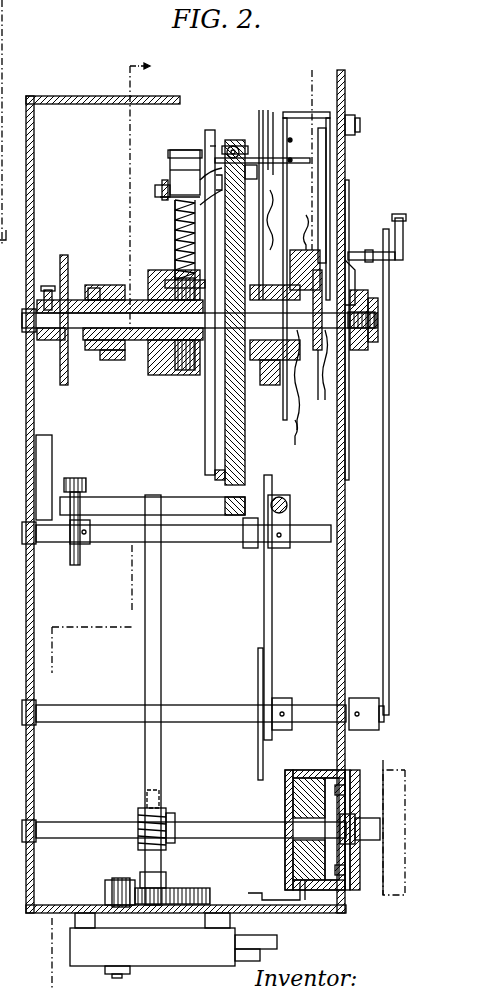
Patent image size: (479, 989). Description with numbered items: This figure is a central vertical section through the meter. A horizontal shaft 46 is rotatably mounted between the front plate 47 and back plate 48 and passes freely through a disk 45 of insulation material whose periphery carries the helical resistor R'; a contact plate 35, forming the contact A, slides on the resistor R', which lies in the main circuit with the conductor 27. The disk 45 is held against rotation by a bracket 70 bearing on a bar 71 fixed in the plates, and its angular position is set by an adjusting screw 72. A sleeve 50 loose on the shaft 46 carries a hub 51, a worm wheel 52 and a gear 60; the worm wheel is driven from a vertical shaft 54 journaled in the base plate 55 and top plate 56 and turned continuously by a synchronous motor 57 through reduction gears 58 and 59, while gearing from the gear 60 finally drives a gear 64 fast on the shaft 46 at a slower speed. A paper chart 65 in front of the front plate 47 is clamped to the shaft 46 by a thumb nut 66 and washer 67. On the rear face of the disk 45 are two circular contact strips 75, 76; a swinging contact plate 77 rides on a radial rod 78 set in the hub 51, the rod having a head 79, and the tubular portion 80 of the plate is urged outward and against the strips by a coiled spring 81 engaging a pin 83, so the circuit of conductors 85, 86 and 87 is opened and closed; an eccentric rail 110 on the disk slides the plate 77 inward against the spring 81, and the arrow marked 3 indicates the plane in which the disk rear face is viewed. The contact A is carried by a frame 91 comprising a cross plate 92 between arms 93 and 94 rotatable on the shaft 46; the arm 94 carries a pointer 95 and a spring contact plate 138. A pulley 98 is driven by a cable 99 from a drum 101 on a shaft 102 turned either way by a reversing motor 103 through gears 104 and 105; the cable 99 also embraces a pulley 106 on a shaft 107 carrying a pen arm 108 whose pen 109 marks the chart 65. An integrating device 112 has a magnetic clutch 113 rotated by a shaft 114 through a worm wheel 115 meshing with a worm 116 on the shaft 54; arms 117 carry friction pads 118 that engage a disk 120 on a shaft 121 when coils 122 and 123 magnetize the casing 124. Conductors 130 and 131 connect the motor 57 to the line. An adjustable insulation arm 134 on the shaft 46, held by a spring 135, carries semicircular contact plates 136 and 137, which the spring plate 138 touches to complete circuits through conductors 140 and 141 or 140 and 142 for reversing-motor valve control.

The section line 3 is at (146, 195).
The conductor 27 is at (11, 251).
The contact plate 35 is at (228, 145).
The disk 45 is at (225, 430).
The horizontal shaft 46 is at (74, 312).
The front plate 47 is at (346, 76).
The back plate 48 is at (34, 130).
The sleeve 50 is at (130, 355).
The hub 51 is at (170, 372).
The worm wheel 52 is at (150, 372).
The vertical shaft 54 is at (161, 640).
The base plate 55 is at (34, 913).
The top plate 56 is at (103, 89).
The synchronous motor 57 is at (145, 958).
The reduction gear 58 is at (108, 882).
The reduction gear 59 is at (185, 888).
The gear 60 is at (115, 360).
The gear 64 is at (72, 255).
The paper chart 65 is at (349, 206).
The thumb nut 66 is at (360, 350).
The washer 67 is at (372, 342).
The bracket 70 is at (290, 482).
The bar 71 is at (192, 497).
The adjusting screw 72 is at (290, 498).
The circular contact strip 75 is at (247, 180).
The circular contact strip 76 is at (215, 140).
The swinging contact plate 77 is at (170, 178).
The radial rod 78 is at (178, 222).
The head 79 is at (170, 160).
The tubular portion 80 is at (170, 190).
The coiled spring 81 is at (175, 242).
The pin 83 is at (162, 200).
The conductor 85 is at (268, 110).
The conductor 86 is at (259, 140).
The conductor 87 is at (258, 893).
The frame 91 is at (290, 112).
The cross plate 92 is at (212, 140).
The arm 93 is at (207, 146).
The arm 94 is at (273, 112).
The pointer 95 is at (360, 128).
The pulley 98 is at (238, 282).
The cable 99 is at (264, 585).
The drum 101 is at (248, 548).
The shaft 102 is at (188, 542).
The reversing shaded pole motor 103 is at (52, 444).
The gear 104 is at (82, 476).
The gear 105 is at (72, 565).
The pulley 106 is at (258, 680).
The shaft 107 is at (192, 722).
The pen arm 108 is at (383, 642).
The pen 109 is at (362, 252).
The eccentric rail 110 is at (215, 455).
The integrating device 112 is at (393, 888).
The magnetic clutch 113 is at (285, 800).
The shaft 114 is at (210, 826).
The worm wheel 115 is at (158, 796).
The worm 116 is at (138, 812).
The arms 117 is at (355, 770).
The friction pads 118 is at (360, 775).
The disk 120 is at (346, 790).
The shaft 121 is at (360, 818).
The coil 122 is at (295, 848).
The coil 123 is at (325, 860).
The casing 124 is at (298, 778).
The conductor 130 is at (272, 935).
The conductor 131 is at (262, 955).
The arm 134 is at (330, 172).
The spring 135 is at (328, 345).
The semicircular contact plate 136 is at (295, 385).
The semicircular contact plate 137 is at (318, 400).
The spring contact plate 138 is at (305, 250).
The conductor 140 is at (261, 220).
The conductor 141 is at (313, 74).
The conductor 142 is at (295, 440).
The contact A is at (222, 160).
The resistor R' is at (232, 139).